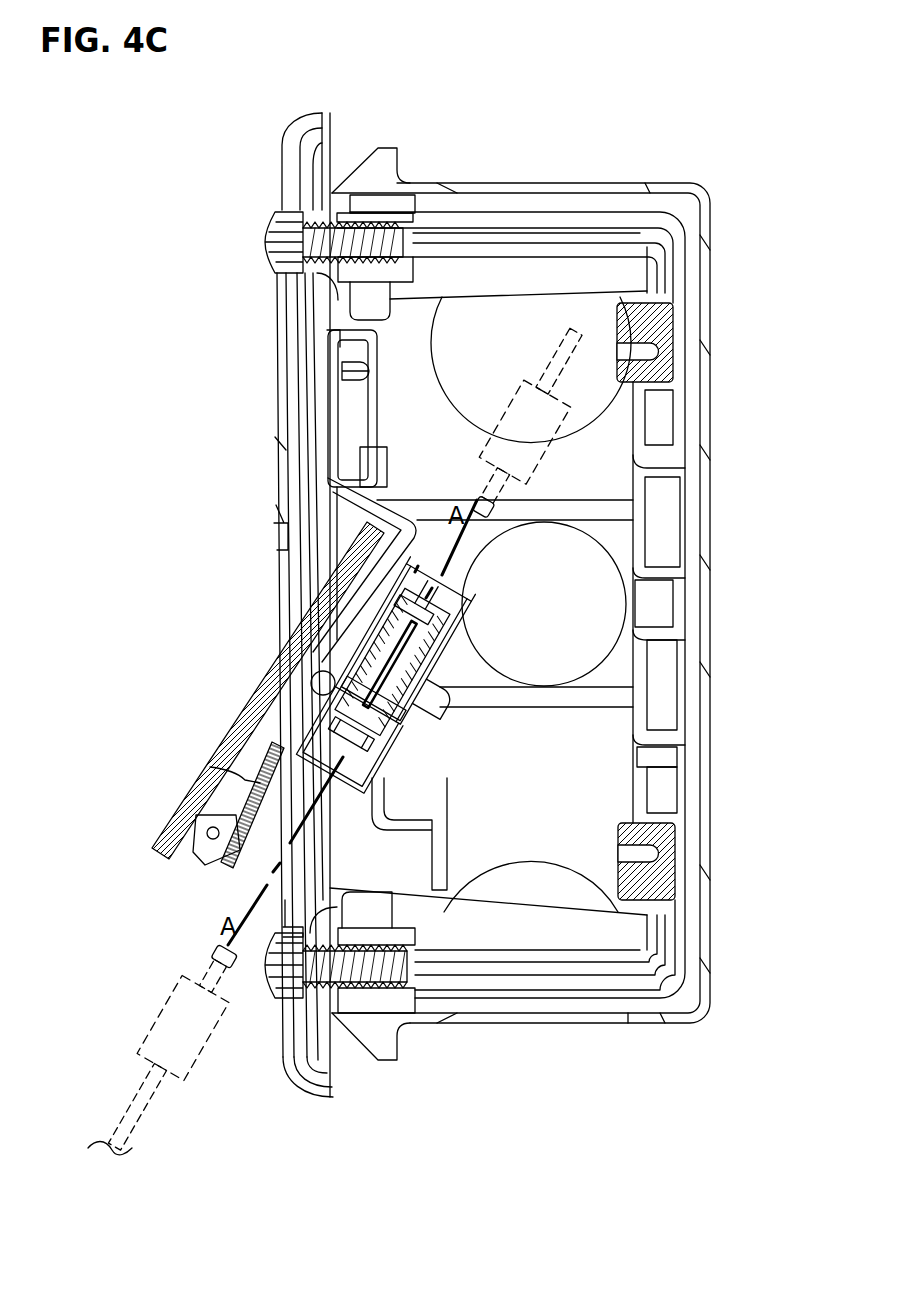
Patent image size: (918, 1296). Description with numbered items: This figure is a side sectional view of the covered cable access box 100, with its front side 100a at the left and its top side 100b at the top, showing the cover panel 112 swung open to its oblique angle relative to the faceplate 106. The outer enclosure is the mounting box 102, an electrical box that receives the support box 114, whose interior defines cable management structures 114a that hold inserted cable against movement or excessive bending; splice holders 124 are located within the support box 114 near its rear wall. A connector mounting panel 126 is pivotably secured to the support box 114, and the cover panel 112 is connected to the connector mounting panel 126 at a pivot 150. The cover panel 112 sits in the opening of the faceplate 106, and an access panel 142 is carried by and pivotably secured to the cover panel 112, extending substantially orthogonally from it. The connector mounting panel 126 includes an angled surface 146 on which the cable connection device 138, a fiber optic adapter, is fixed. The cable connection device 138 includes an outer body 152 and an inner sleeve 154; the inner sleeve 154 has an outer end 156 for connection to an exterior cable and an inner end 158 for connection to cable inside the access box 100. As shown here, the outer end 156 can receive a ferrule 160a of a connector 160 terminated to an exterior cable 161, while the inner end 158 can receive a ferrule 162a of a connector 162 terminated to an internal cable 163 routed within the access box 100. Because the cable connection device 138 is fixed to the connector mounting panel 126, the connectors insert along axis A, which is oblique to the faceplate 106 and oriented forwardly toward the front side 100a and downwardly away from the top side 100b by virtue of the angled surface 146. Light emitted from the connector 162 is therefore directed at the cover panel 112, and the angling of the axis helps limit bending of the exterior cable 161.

The covered cable access box 100 is at (707, 120).
The front side 100a is at (198, 551).
The top side 100b is at (490, 128).
The mounting box 102 is at (704, 207).
The faceplate 106 is at (280, 415).
The cover panel 112 is at (262, 690).
The support box 114 is at (607, 228).
The cable management structures 114a is at (640, 516).
The splice holder 124 is at (655, 328).
The connector mounting panel 126 is at (332, 378).
The cable connection device 138 is at (440, 606).
The access panel 142 is at (226, 853).
The angled surface 146 is at (443, 680).
The pivot 150 is at (318, 678).
The outer body 152 is at (380, 760).
The inner sleeve 154 is at (375, 697).
The outer end 156 is at (326, 738).
The inner end 158 is at (415, 598).
The connector 160 is at (157, 1047).
The ferrule 160a is at (213, 960).
The exterior cable 161 is at (137, 1120).
The connector 162 is at (520, 405).
The ferrule 162a is at (507, 492).
The internal cable 163 is at (605, 345).